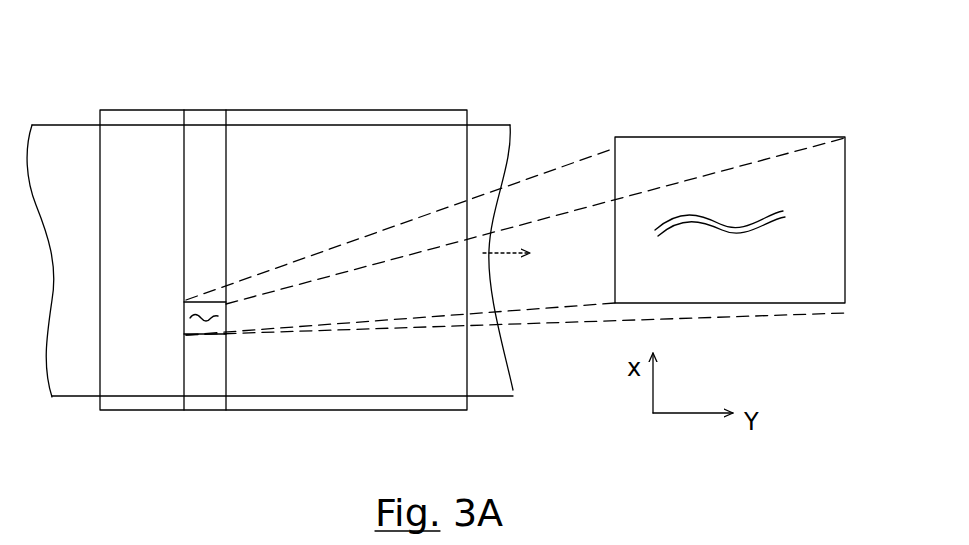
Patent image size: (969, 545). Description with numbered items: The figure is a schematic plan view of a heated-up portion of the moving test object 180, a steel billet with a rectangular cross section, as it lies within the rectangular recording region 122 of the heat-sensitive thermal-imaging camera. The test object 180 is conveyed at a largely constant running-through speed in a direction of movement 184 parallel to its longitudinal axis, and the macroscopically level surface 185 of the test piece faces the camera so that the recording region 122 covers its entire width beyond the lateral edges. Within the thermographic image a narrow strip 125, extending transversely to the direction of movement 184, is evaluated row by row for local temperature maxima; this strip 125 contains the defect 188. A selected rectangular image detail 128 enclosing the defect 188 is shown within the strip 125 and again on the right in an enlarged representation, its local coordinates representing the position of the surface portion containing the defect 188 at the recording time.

The recording region 122 is at (337, 412).
The strip 125 is at (183, 103).
The selected image detail 128 is at (190, 300).
The test object 180 is at (515, 380).
The direction of movement 184 is at (505, 256).
The surface 185 is at (491, 150).
The defect 188 is at (190, 318).